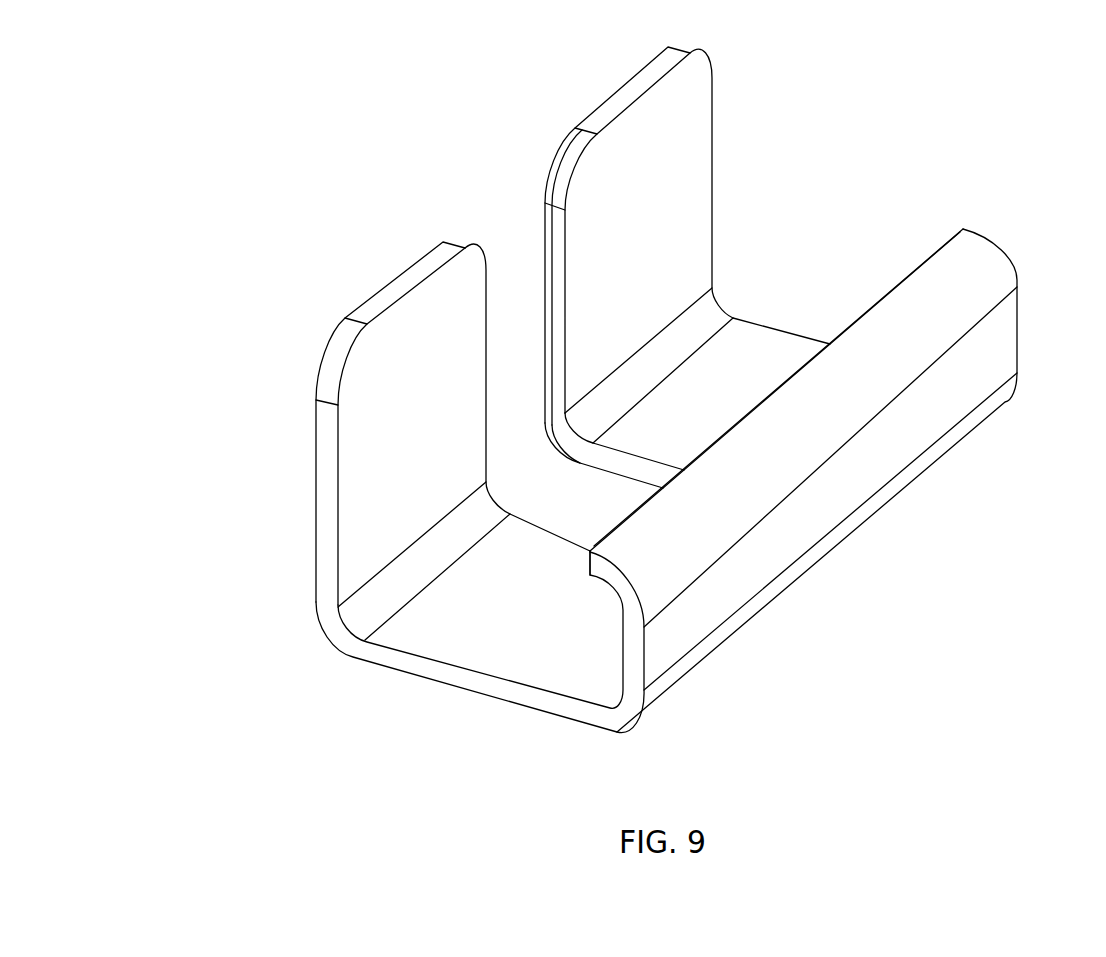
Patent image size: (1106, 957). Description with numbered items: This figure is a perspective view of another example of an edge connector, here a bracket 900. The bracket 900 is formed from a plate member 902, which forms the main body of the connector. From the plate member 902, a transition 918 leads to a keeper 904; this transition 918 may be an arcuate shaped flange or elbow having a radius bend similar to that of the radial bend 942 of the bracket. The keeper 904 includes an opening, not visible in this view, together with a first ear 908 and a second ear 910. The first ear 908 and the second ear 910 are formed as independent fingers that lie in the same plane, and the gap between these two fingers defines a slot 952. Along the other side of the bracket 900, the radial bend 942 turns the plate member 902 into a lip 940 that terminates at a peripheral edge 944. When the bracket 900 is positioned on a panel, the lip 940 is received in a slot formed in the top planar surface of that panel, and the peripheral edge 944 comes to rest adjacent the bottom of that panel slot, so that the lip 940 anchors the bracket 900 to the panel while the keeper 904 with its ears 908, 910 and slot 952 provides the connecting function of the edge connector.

The bracket 900 is at (975, 72).
The plate member 902 is at (828, 510).
The keeper 904 is at (258, 490).
The first ear 908 is at (428, 410).
The second ear 910 is at (650, 236).
The transition 918 is at (617, 725).
The lip 940 is at (1012, 237).
The radial bend 942 is at (618, 571).
The peripheral edge 944 is at (590, 562).
The slot 952 is at (514, 250).